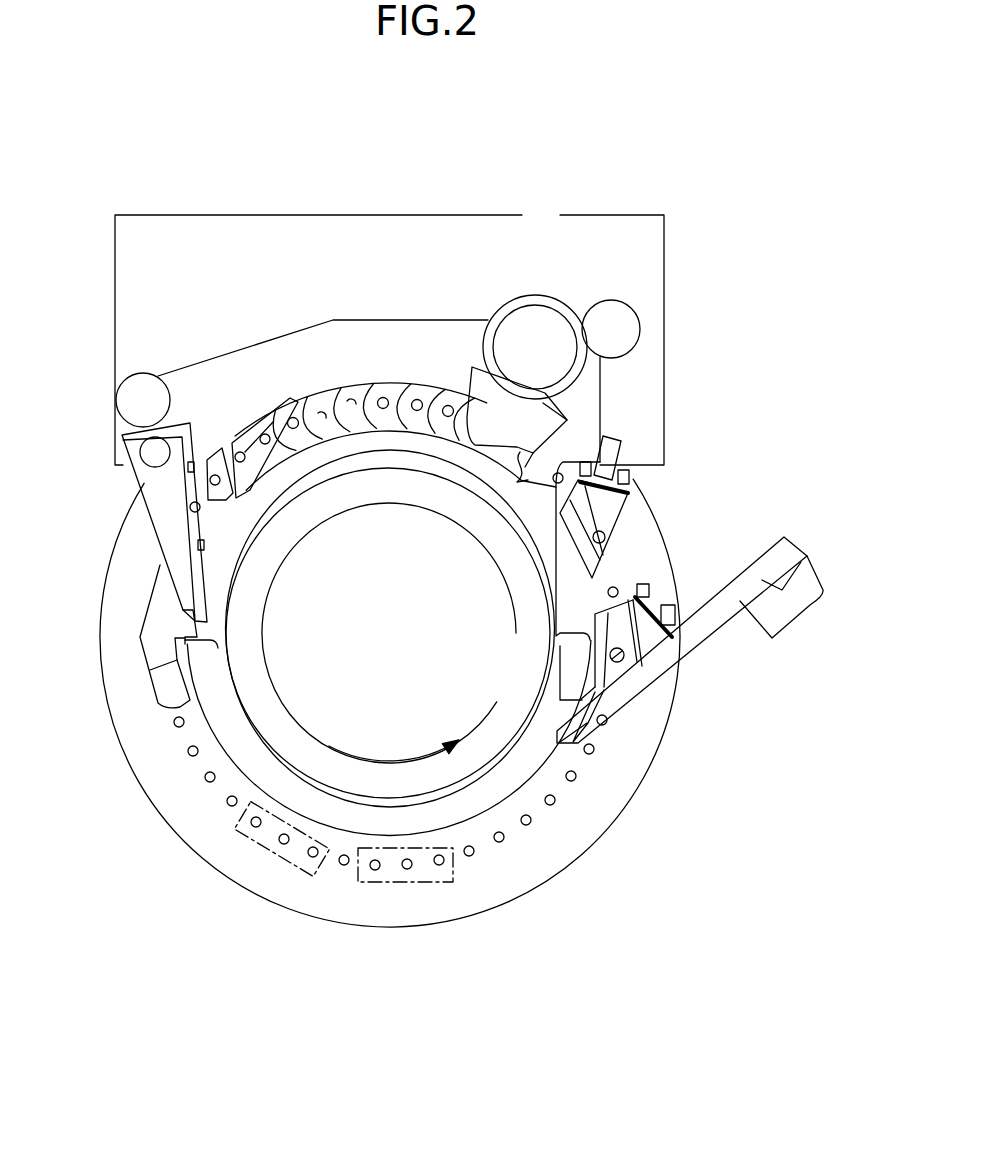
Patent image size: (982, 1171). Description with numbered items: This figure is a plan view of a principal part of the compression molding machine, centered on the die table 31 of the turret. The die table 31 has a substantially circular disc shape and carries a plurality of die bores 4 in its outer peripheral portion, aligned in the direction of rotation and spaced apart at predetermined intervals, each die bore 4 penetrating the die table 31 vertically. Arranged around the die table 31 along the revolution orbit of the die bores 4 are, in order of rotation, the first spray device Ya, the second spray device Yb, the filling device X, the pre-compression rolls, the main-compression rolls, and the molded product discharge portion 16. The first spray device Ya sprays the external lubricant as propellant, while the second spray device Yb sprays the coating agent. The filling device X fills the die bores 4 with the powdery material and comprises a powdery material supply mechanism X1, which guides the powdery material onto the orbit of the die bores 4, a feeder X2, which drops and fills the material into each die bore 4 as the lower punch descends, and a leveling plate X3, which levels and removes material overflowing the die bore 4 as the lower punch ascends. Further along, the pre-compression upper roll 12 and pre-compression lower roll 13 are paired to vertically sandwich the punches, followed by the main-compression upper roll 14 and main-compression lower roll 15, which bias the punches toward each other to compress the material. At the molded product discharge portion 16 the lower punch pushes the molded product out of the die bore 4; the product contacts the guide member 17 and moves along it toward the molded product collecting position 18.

The filling device X is at (380, 215).
The powdery material supply mechanism X1 is at (536, 295).
The feeder X2 is at (375, 345).
The leveling plate X3 is at (146, 530).
The first spray device Ya is at (646, 656).
The second spray device Yb is at (616, 529).
The die bore 4 is at (185, 756).
The pre-compression upper roll 12 is at (270, 871).
The pre-compression lower roll 13 is at (277, 858).
The main-compression upper roll 14 is at (405, 910).
The main-compression lower roll 15 is at (410, 884).
The molded product discharge portion 16 is at (581, 760).
The guide member 17 is at (626, 698).
The molded product collecting position 18 is at (800, 627).
The die table 31 is at (505, 900).